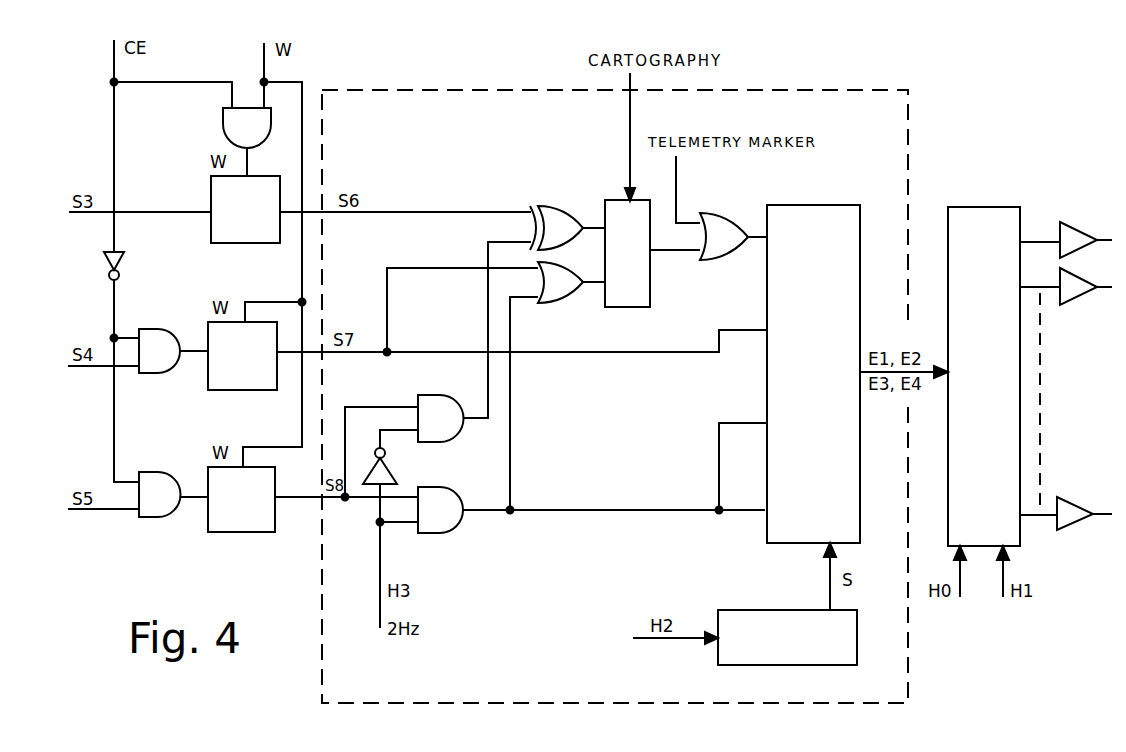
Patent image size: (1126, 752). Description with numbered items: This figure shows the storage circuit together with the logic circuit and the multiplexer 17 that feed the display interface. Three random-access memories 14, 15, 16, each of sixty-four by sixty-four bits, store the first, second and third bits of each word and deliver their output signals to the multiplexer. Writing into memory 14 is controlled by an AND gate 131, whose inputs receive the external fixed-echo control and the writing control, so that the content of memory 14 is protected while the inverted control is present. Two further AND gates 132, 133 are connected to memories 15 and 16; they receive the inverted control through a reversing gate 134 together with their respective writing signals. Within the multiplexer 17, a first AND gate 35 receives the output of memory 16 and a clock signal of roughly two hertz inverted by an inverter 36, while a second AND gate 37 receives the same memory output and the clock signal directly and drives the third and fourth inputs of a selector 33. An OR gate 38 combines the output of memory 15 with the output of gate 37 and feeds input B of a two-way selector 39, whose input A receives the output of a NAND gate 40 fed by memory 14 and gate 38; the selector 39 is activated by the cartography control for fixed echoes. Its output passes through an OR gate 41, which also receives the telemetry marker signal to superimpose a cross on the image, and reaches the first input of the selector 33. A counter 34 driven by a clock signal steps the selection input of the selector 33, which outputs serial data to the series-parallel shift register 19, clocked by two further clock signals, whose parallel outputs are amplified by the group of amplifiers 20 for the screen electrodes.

The AND gate 131 is at (223, 124).
The random-access memory 14 is at (211, 195).
The reversing gate 134 is at (124, 263).
The AND gate 132 is at (170, 318).
The random-access memory 15 is at (224, 390).
The AND gate 133 is at (150, 517).
The random-access memory 16 is at (245, 532).
The NAND gate 40 is at (560, 206).
The OR gate 38 is at (555, 303).
The selector 39 is at (650, 295).
The OR gate 41 is at (720, 260).
The selector 33 is at (805, 205).
The first AND gate 35 is at (440, 395).
The inverter 36 is at (393, 470).
The second AND gate 37 is at (445, 533).
The counter 34 is at (785, 610).
The multiplexer 17 is at (908, 133).
The series-parallel shift register 19 is at (997, 207).
The group of amplifiers 20 is at (1068, 530).